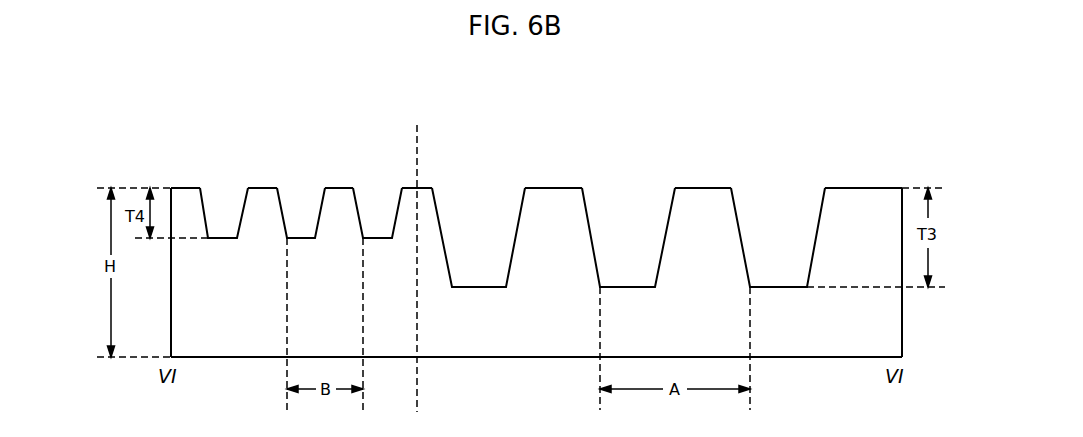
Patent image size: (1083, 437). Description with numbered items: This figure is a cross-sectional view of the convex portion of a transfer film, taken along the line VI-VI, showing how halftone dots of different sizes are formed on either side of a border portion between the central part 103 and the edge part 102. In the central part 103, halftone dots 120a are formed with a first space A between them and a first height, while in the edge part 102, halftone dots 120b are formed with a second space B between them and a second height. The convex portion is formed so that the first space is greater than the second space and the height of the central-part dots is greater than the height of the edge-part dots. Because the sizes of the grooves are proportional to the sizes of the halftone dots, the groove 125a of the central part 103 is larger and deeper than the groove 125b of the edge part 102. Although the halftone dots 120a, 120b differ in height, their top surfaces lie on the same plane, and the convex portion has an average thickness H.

The halftone dots of the edge part 120b is at (260, 196).
The groove of the edge part 125b is at (302, 196).
The edge part 102 is at (405, 148).
The central part 103 is at (478, 148).
The halftone dots of the central part 120a is at (700, 200).
The groove of the central part 125a is at (619, 218).